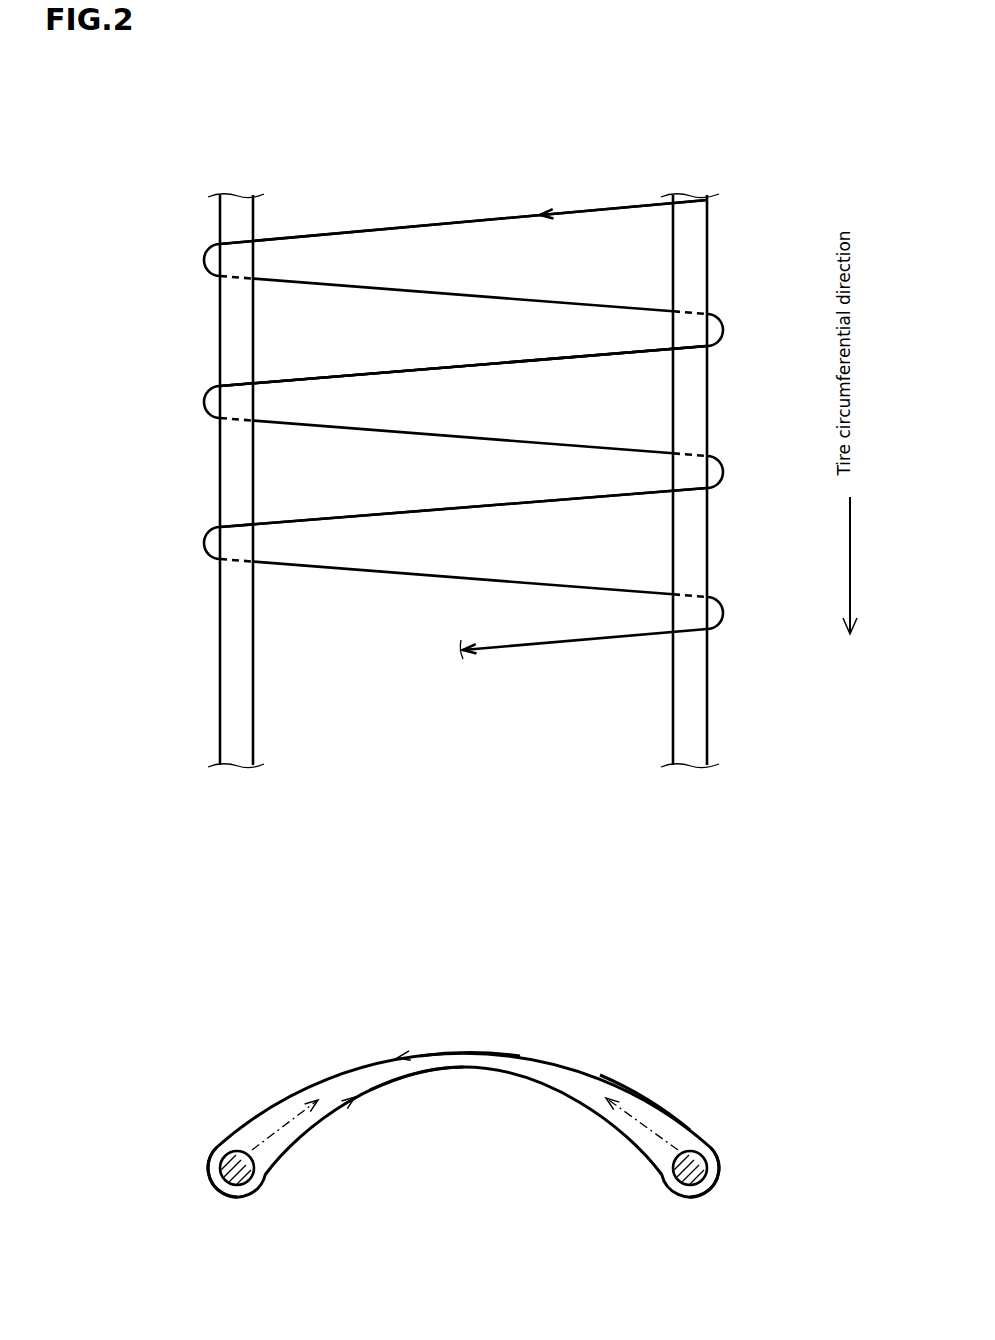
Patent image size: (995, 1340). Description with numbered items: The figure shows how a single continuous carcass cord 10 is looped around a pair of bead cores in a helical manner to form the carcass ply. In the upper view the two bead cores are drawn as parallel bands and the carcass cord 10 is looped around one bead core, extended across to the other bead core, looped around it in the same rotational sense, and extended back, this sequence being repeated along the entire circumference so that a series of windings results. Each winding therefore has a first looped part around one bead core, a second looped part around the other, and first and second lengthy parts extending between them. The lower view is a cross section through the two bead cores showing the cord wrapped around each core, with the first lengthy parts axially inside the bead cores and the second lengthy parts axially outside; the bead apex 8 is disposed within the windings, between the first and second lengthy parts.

The bead apex 8 is at (268, 1116).
The carcass cord 10 is at (449, 374).